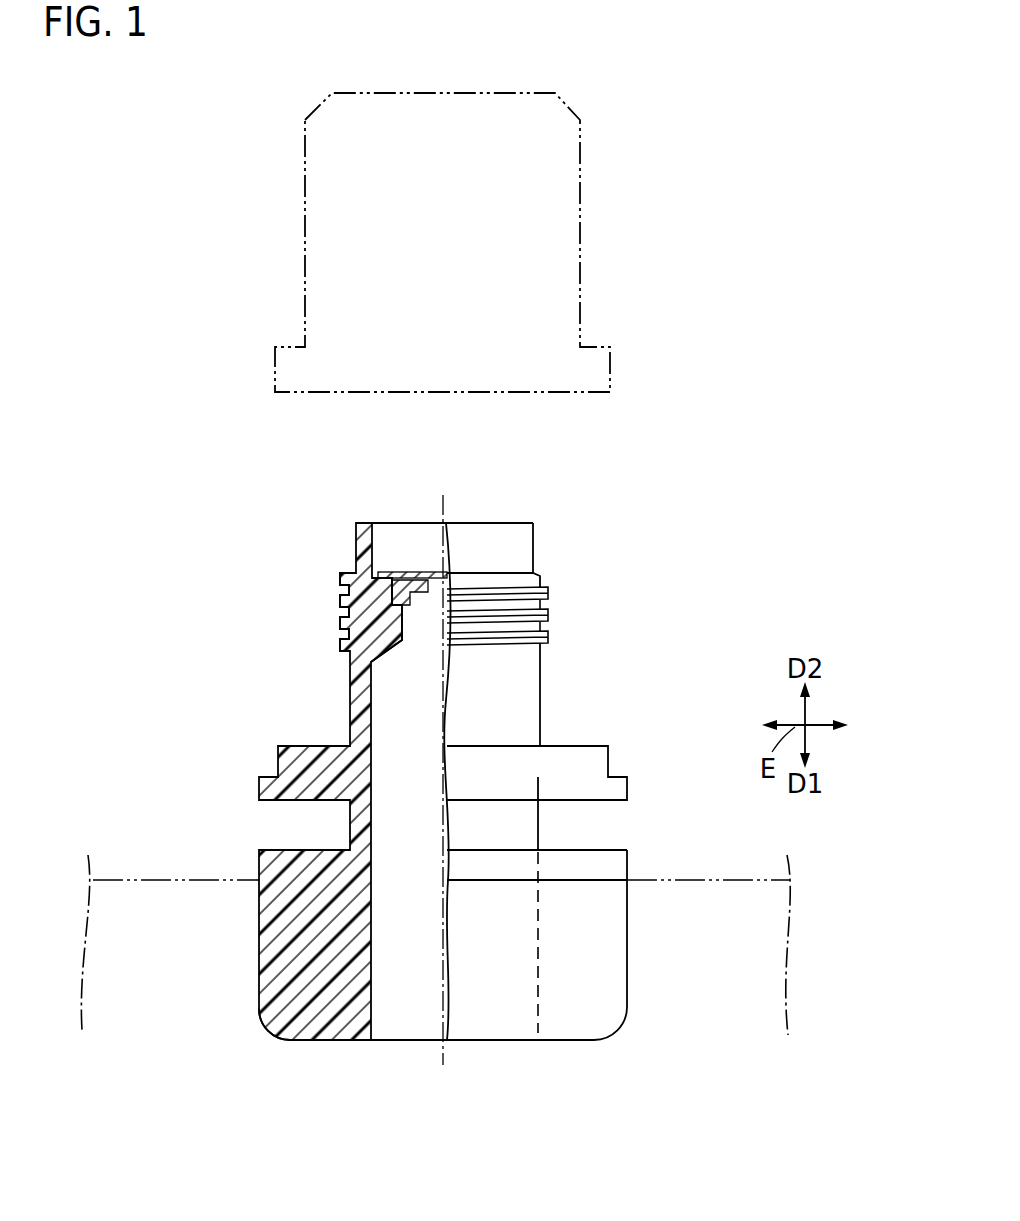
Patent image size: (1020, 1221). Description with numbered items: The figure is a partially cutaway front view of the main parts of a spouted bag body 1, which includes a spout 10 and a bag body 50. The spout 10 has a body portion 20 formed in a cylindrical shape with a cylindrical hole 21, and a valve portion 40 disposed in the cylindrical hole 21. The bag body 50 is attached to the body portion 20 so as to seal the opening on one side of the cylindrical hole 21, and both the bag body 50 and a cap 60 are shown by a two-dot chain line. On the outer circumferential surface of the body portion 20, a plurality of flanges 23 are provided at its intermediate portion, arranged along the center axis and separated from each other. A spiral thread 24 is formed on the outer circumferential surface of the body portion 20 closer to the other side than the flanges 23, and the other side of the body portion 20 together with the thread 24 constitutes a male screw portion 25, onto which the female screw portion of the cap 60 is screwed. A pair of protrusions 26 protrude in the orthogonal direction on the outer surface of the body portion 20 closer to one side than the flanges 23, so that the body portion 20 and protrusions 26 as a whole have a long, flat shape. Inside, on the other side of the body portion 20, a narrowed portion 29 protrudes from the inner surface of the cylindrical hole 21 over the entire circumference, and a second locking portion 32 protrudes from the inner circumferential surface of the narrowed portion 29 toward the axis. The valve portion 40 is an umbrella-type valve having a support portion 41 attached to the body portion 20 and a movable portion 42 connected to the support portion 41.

The spouted bag body 1 is at (107, 497).
The spout 10 is at (272, 562).
The body portion 20 is at (553, 540).
The cylindrical hole 21 is at (368, 710).
The flanges 23 is at (612, 788).
The thread 24 is at (548, 612).
The male screw portion 25 is at (566, 576).
The protrusions 26 is at (312, 1015).
The narrowed portion 29 is at (372, 600).
The second locking portion 32 is at (380, 655).
The valve portion 40 is at (391, 506).
The support portion 41 is at (410, 576).
The movable portion 42 is at (397, 583).
The bag body 50 is at (180, 945).
The cap 60 is at (598, 229).